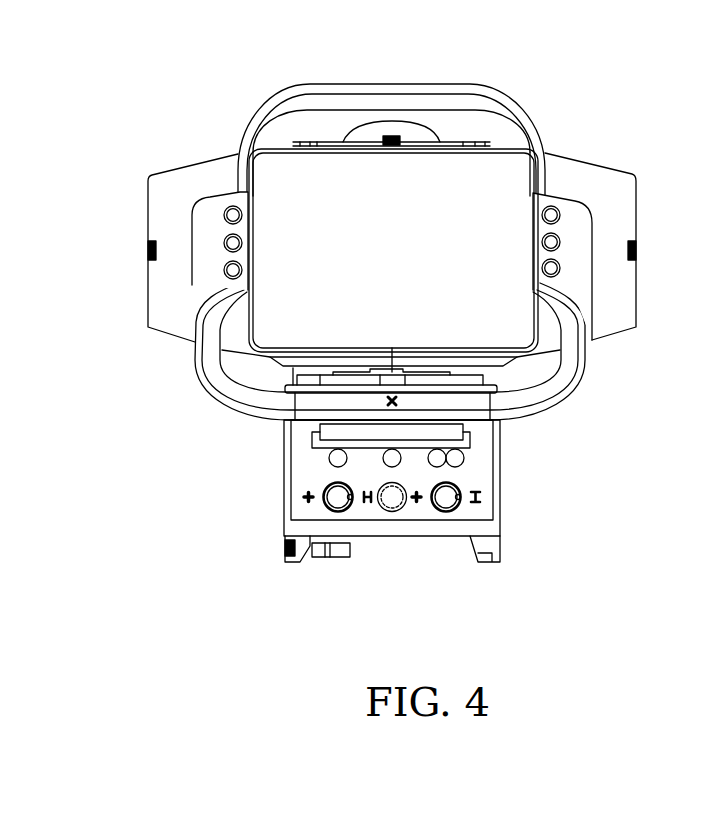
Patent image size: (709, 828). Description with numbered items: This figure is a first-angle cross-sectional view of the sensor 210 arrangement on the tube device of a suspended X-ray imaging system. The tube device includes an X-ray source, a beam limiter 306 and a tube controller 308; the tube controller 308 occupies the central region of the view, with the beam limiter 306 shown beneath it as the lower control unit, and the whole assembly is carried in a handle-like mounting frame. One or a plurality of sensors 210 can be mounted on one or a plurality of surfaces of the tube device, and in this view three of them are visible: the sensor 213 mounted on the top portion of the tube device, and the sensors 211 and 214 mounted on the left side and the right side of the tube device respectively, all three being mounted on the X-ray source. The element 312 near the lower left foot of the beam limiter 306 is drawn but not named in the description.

The sensor 210 is at (376, 63).
The sensor 213 is at (391, 136).
The tube controller 308 is at (512, 190).
The sensor 214 is at (148, 248).
The sensor 211 is at (636, 249).
The beam limiter 306 is at (478, 470).
The connector port 312 is at (289, 560).